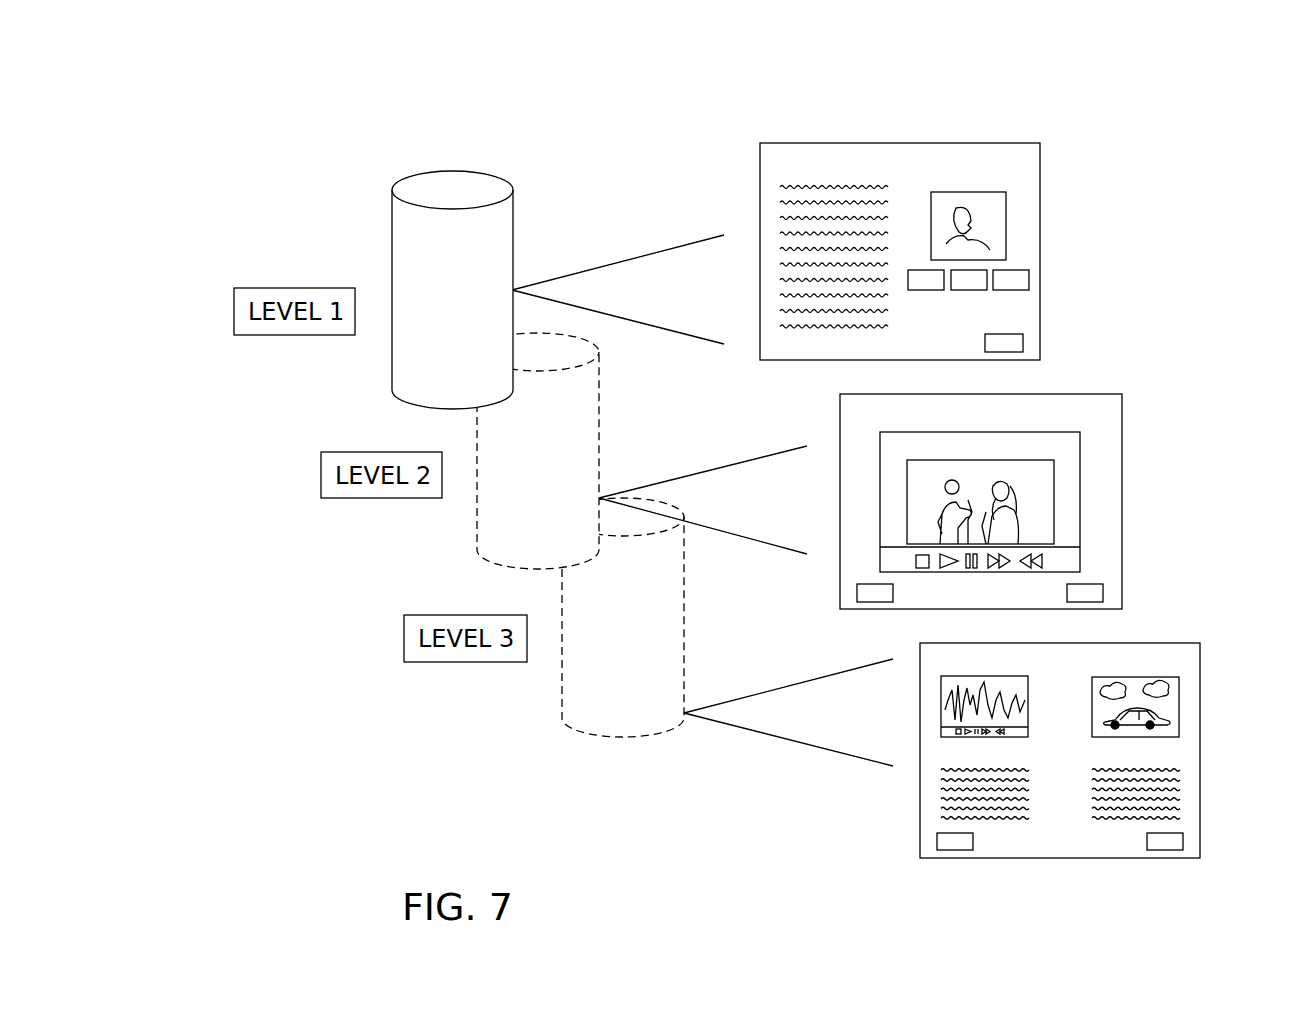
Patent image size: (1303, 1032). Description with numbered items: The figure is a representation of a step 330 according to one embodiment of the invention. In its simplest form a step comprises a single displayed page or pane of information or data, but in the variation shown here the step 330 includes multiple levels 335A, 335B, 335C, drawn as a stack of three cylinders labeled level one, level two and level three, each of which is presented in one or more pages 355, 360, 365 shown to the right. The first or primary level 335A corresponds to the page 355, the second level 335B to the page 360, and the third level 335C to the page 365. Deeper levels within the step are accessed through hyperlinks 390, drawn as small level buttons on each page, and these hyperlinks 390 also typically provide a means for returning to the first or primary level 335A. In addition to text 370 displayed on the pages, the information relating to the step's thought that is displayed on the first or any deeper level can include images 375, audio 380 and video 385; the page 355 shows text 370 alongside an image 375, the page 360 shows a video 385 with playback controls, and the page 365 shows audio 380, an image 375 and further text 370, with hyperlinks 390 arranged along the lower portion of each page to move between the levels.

The step 330 is at (368, 113).
The first or primary level 335A is at (405, 371).
The second level 335B is at (490, 533).
The third level 335C is at (575, 700).
The page 355 is at (1040, 212).
The page 360 is at (1122, 422).
The page 365 is at (1200, 706).
The text content 370 is at (830, 187).
The images 375 is at (951, 192).
The audio 380 is at (987, 676).
The video 385 is at (1080, 478).
The hyperlinks 390 is at (1029, 282).